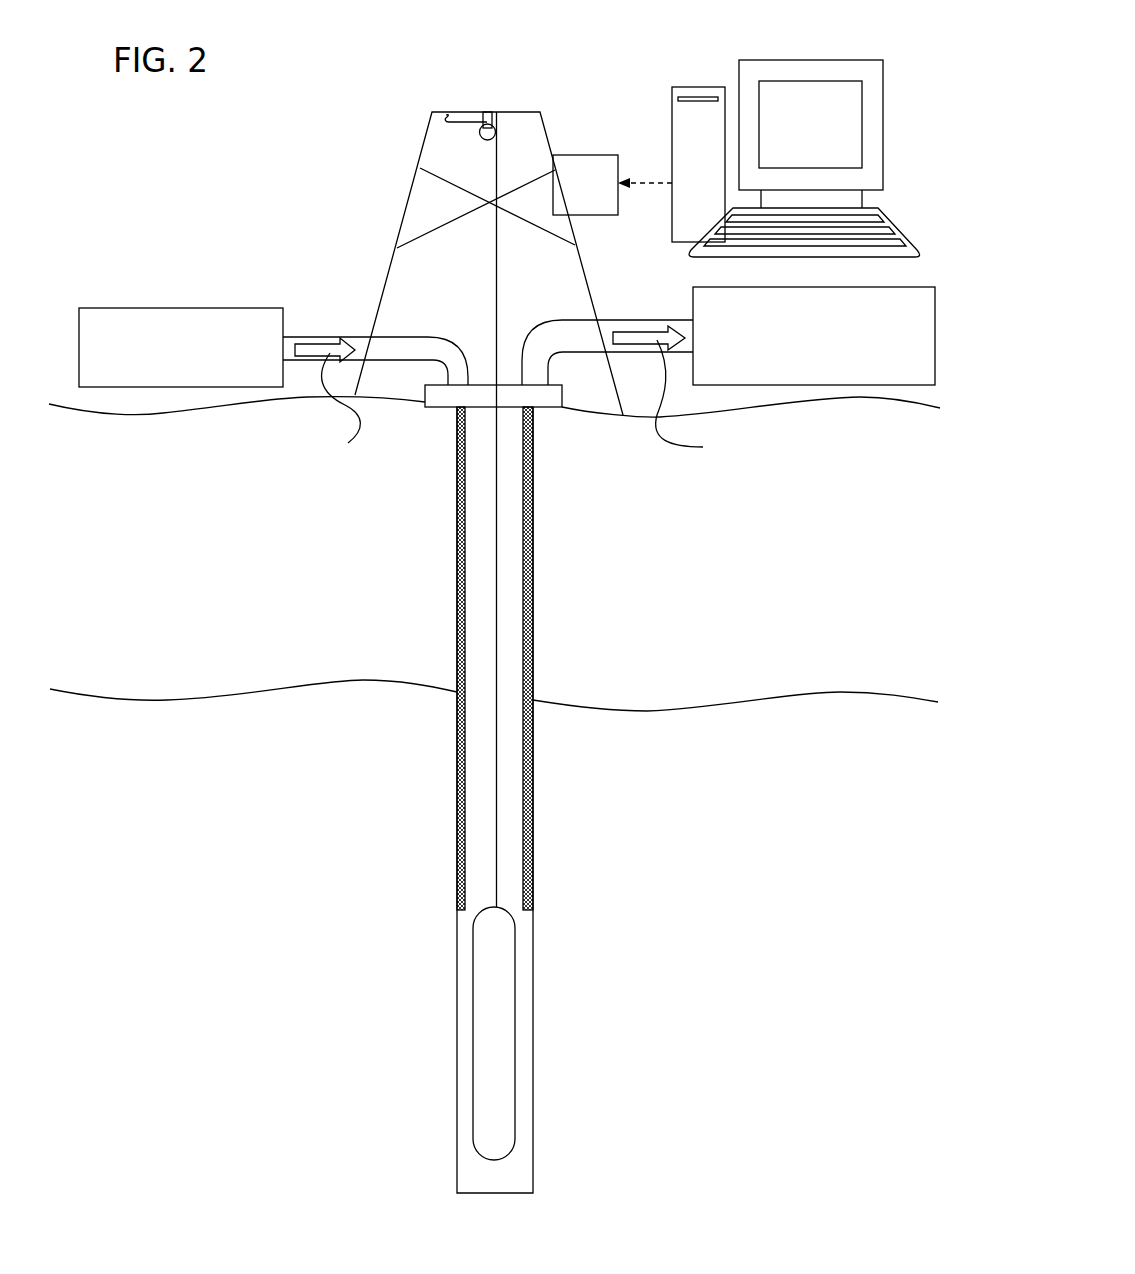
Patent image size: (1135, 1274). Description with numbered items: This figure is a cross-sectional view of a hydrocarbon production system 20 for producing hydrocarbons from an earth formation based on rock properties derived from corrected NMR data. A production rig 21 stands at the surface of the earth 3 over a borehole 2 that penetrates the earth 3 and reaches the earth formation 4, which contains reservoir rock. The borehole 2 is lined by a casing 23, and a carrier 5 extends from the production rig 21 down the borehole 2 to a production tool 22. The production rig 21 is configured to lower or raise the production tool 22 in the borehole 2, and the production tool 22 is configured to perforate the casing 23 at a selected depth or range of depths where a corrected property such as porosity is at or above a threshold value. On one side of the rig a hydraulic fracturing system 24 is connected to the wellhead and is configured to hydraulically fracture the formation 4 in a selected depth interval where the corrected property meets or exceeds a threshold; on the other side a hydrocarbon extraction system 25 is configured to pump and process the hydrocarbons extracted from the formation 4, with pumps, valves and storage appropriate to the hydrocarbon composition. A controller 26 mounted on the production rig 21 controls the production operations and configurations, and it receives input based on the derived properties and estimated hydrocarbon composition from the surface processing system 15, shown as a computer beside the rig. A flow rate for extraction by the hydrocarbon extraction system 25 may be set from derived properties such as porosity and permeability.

The hydrocarbon production system 20 is at (212, 207).
The production rig 21 is at (378, 273).
The controller 26 is at (588, 153).
The surface processing system 15 is at (680, 88).
The hydraulic fracturing system 24 is at (181, 347).
The hydrocarbon extraction system 25 is at (814, 336).
The earth 3 is at (168, 456).
The earth formation 4 is at (162, 736).
The borehole 2 is at (487, 527).
The casing 23 is at (457, 582).
The carrier 5 is at (497, 747).
The production tool 22 is at (473, 987).